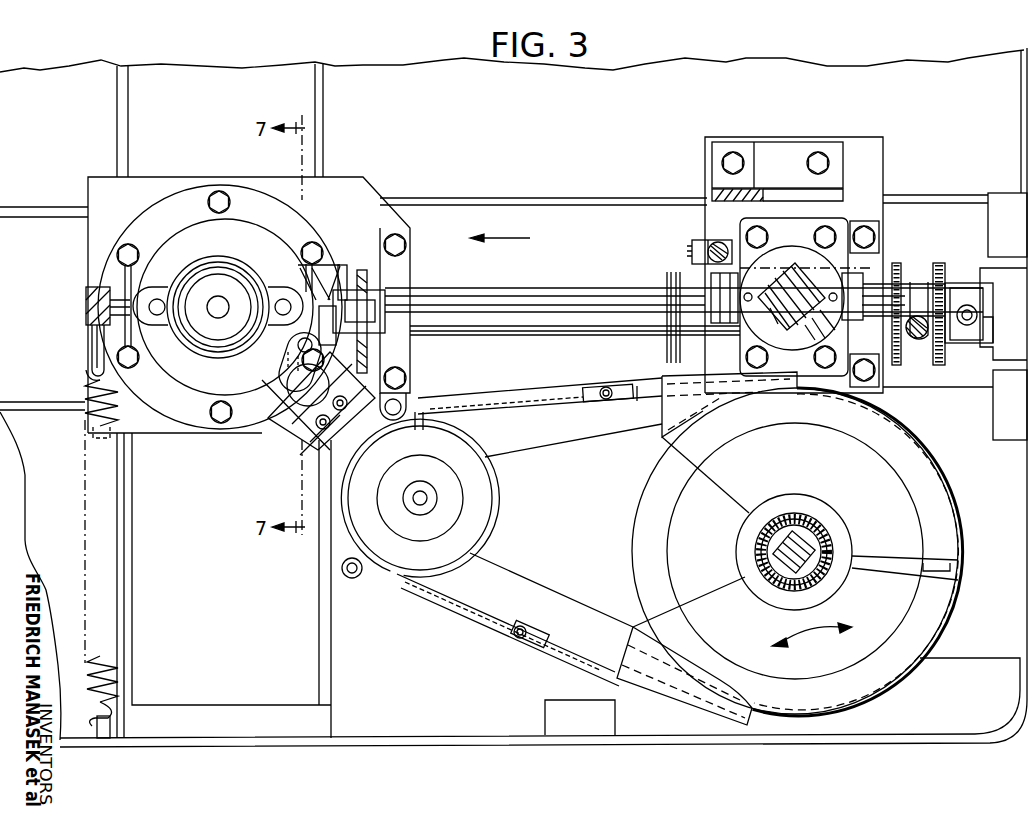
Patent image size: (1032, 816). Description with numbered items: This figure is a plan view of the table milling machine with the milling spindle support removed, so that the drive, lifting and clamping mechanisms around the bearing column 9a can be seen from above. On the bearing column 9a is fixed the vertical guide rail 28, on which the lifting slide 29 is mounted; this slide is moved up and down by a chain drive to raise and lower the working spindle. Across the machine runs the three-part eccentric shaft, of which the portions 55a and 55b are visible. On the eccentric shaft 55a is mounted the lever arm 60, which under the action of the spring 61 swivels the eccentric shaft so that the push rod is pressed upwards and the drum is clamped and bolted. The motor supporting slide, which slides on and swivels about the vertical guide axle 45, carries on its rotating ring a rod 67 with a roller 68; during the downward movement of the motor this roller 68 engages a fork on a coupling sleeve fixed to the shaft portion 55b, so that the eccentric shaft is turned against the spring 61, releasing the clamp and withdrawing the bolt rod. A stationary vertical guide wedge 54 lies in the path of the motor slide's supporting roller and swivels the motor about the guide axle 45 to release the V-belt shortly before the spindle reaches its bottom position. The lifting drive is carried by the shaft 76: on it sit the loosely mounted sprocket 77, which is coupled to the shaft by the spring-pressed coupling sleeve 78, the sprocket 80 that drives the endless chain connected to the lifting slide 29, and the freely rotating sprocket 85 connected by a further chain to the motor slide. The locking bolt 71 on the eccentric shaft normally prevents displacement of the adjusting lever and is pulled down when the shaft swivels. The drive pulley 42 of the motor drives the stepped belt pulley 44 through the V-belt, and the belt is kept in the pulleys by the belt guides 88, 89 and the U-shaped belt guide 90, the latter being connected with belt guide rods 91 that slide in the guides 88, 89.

The bearing column 9a is at (190, 192).
The eccentric shaft 55a is at (100, 287).
The lever arm 60 is at (95, 334).
The spring 61 is at (118, 672).
The vertical guide rail 28 is at (305, 410).
The lifting slide 29 is at (278, 420).
The sprocket 80 is at (372, 268).
The eccentric shaft portion 55b is at (622, 265).
The shaft 76 is at (506, 325).
The stationary vertical guide wedge 54 is at (723, 189).
The rod 67 is at (717, 242).
The roller 68 is at (690, 251).
The vertical guide axle 45 is at (780, 318).
The sprocket 85 is at (897, 262).
The sprocket 77 is at (946, 272).
The coupling sleeve 78 is at (955, 283).
The locking bolt 71 is at (916, 338).
The belt guide rods 91 is at (625, 392).
The belt pulley 44 is at (477, 512).
The belt guide 90 is at (382, 570).
The drive pulley 42 is at (650, 542).
The belt guide 88 is at (936, 514).
The belt guide 89 is at (873, 675).